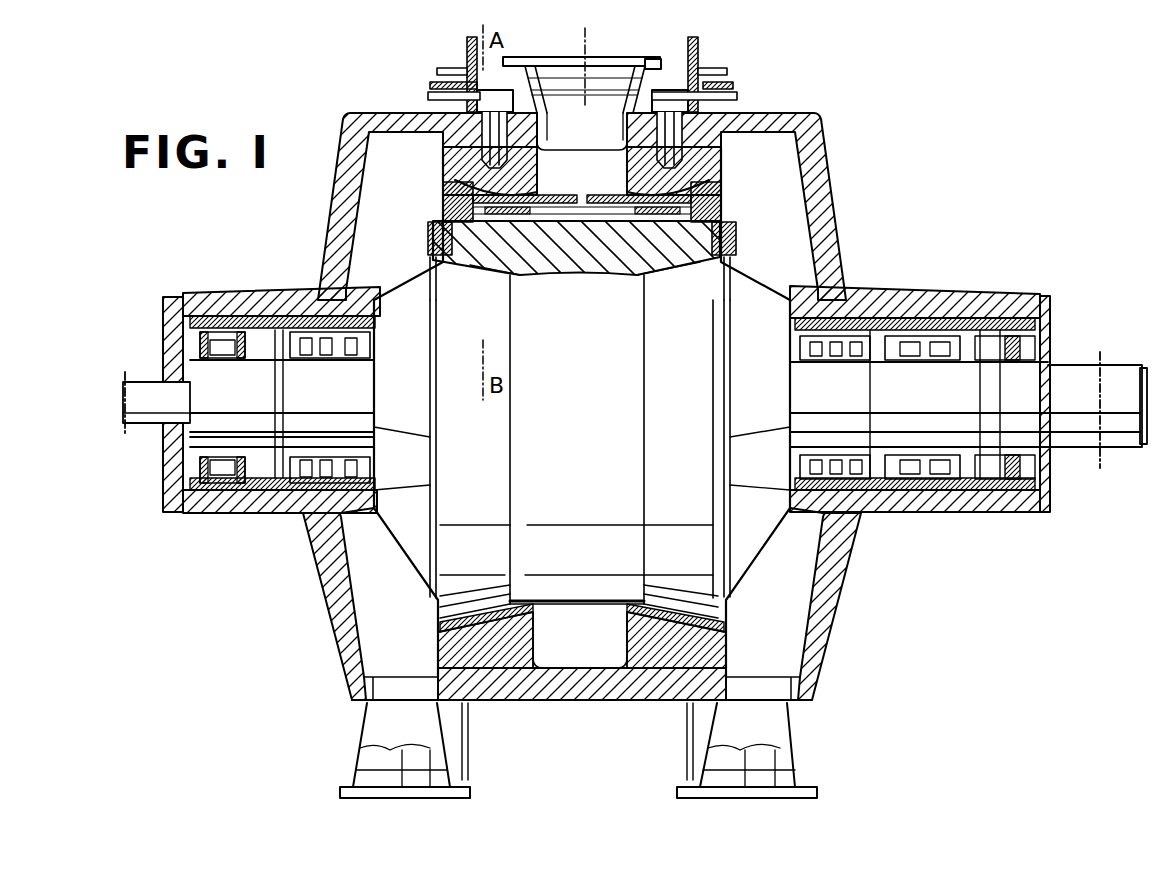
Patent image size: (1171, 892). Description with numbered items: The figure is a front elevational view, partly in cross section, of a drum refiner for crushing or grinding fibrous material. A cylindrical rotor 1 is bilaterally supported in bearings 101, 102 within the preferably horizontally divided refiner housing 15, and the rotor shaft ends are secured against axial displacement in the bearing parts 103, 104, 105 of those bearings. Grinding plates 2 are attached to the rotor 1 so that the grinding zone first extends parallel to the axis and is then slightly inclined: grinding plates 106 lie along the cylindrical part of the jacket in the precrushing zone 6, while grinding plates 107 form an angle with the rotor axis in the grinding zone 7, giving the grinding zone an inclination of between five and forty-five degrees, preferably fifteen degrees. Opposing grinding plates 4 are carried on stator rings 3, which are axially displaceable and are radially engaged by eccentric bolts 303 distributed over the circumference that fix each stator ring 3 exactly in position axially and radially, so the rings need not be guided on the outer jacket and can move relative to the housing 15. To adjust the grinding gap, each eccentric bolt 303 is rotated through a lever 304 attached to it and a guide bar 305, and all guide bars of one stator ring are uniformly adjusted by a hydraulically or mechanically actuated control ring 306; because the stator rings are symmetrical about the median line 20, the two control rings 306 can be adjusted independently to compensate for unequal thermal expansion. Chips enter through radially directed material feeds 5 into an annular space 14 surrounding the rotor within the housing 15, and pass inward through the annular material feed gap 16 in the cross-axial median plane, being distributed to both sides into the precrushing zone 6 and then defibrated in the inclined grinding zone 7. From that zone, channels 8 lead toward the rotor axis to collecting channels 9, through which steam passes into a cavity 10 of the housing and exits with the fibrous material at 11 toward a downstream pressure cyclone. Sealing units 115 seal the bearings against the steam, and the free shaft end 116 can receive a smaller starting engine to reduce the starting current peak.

The rotor 1 is at (467, 535).
The grinding plates 2 is at (718, 200).
The stator rings 3 is at (718, 156).
The opposing grinding plates 4 is at (718, 184).
The material feed 5 is at (614, 58).
The precrushing zone 6 is at (567, 232).
The grinding zone 7 is at (443, 194).
The channels 8 is at (518, 250).
The collecting channel 9 is at (480, 232).
The cavity 10 is at (378, 622).
The outlet 11 is at (368, 760).
The annular space 14 is at (560, 157).
The refiner housing 15 is at (790, 113).
The annular material feed gap 16 is at (578, 196).
The median line 20 is at (586, 50).
The bearing 101 is at (249, 294).
The bearing 102 is at (915, 293).
The bearing part 103 is at (300, 330).
The bearing part 104 is at (200, 330).
The bearing part 105 is at (1012, 334).
The grinding plates 106 is at (537, 268).
The grinding plates 107 is at (443, 212).
The sealing units 115 is at (312, 488).
The free shaft end 116 is at (1102, 364).
The eccentric bolts 303 is at (690, 122).
The lever 304 is at (430, 96).
The guide bar 305 is at (733, 82).
The control ring 306 is at (467, 45).